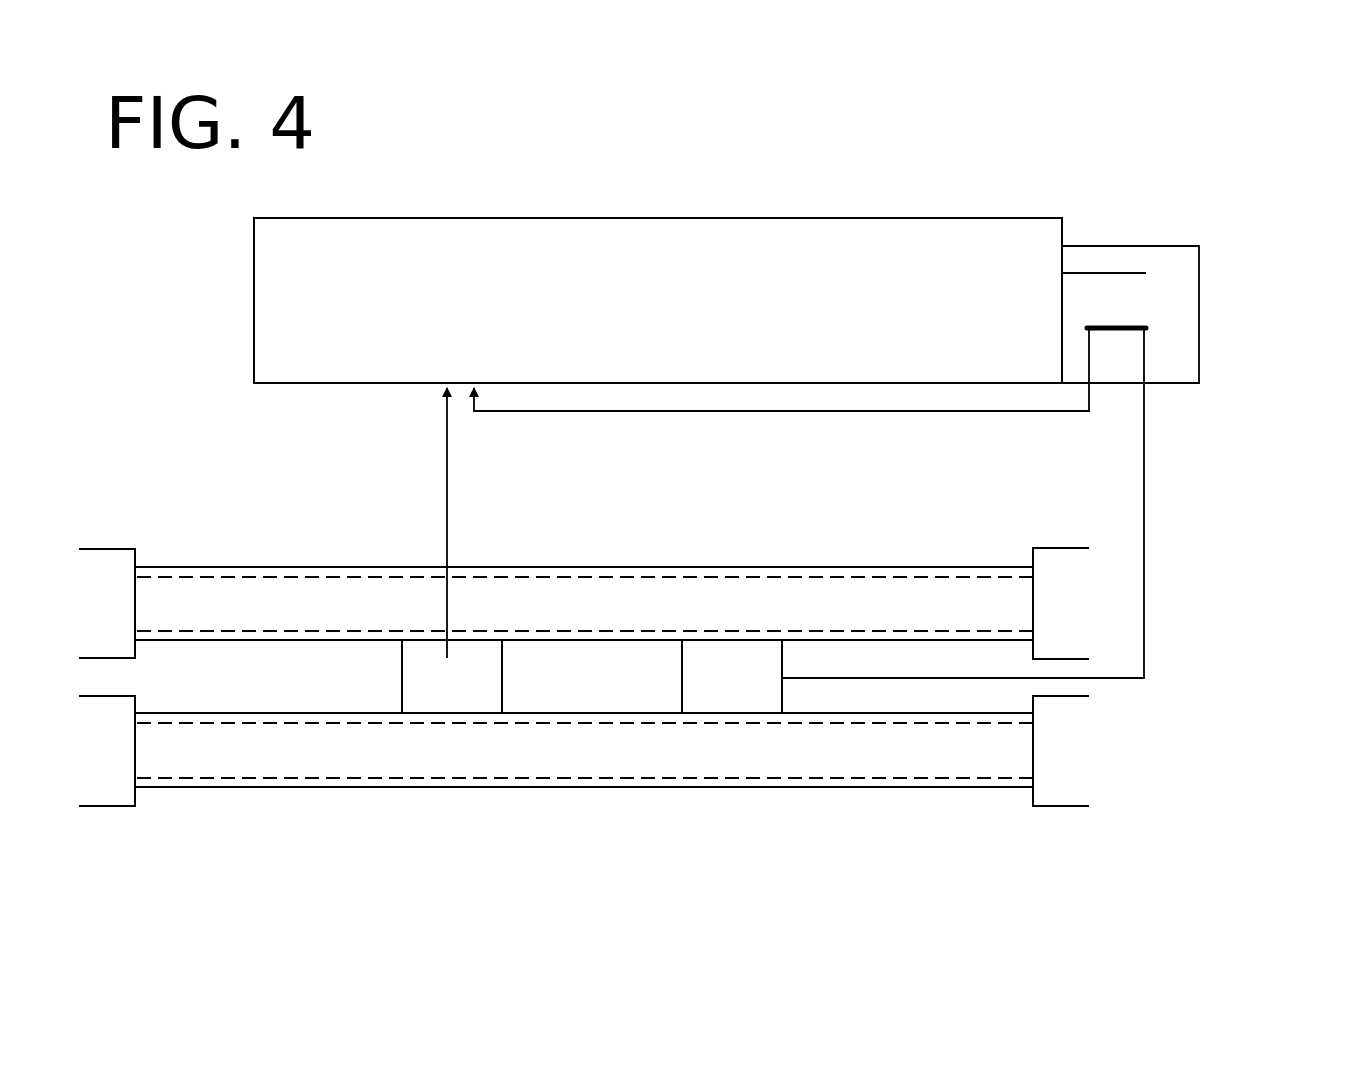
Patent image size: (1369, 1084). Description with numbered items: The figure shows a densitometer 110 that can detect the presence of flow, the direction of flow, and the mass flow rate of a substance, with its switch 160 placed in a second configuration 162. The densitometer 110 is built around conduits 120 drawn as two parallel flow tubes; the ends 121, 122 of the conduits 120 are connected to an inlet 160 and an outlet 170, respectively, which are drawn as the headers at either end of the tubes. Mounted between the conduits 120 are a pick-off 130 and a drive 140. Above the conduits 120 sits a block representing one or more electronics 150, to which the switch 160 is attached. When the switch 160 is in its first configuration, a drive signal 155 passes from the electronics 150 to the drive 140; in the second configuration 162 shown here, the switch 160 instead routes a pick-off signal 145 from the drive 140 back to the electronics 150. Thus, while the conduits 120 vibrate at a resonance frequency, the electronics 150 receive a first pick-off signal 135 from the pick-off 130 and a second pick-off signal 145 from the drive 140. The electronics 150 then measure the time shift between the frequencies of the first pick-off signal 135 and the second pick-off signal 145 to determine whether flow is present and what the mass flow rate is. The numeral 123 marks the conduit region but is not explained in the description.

The densitometer 110 is at (1230, 530).
The conduits 120 is at (611, 567).
The end of the conduits 121 is at (978, 540).
The end of the conduits 122 is at (190, 535).
The channel wall 123 is at (851, 603).
The pick-off 130 is at (474, 677).
The first pick-off signal 135 is at (447, 457).
The drive 140 is at (741, 669).
The pick-off signal 145 is at (1144, 448).
The electronics 150 is at (978, 218).
The drive signal 155 is at (1099, 273).
The switch 160 is at (1180, 338).
The second configuration 162 is at (1128, 326).
The outlet 170 is at (99, 549).